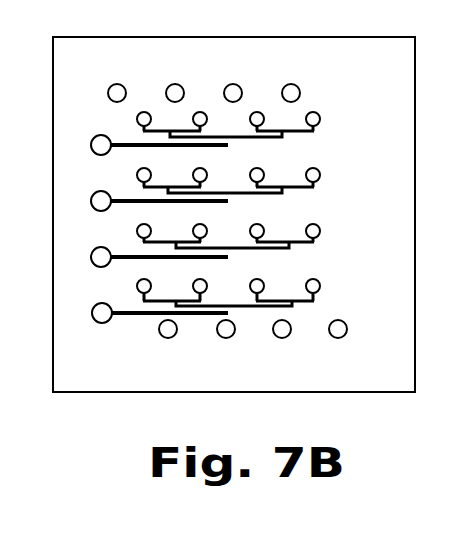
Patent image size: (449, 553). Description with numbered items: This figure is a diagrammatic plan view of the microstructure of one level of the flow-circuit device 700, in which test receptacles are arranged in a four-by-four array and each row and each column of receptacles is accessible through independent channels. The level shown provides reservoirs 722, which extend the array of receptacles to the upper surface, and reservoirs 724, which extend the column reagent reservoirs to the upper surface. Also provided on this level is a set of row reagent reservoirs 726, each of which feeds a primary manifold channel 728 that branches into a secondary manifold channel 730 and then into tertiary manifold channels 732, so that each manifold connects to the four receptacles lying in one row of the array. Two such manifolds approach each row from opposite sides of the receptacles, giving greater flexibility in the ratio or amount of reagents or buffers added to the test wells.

The interconnect structure 700 is at (207, 198).
The reservoirs 722 is at (146, 111).
The reservoirs 724 is at (107, 96).
The row reagent reservoirs 726 is at (93, 320).
The primary manifold channel 728 is at (133, 316).
The secondary manifold channel 730 is at (252, 309).
The tertiary manifold channel 732 is at (300, 304).